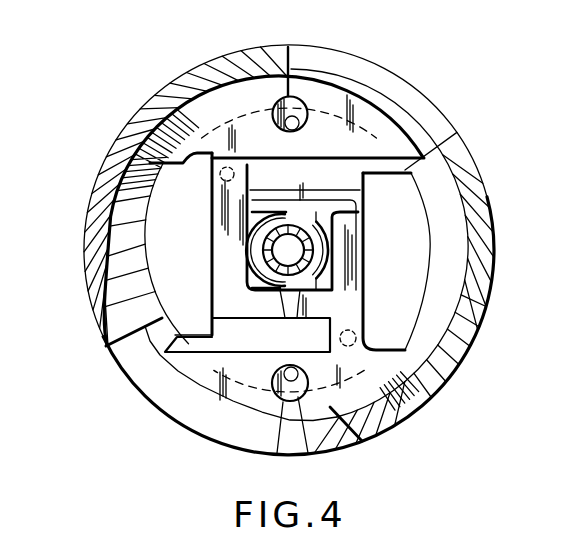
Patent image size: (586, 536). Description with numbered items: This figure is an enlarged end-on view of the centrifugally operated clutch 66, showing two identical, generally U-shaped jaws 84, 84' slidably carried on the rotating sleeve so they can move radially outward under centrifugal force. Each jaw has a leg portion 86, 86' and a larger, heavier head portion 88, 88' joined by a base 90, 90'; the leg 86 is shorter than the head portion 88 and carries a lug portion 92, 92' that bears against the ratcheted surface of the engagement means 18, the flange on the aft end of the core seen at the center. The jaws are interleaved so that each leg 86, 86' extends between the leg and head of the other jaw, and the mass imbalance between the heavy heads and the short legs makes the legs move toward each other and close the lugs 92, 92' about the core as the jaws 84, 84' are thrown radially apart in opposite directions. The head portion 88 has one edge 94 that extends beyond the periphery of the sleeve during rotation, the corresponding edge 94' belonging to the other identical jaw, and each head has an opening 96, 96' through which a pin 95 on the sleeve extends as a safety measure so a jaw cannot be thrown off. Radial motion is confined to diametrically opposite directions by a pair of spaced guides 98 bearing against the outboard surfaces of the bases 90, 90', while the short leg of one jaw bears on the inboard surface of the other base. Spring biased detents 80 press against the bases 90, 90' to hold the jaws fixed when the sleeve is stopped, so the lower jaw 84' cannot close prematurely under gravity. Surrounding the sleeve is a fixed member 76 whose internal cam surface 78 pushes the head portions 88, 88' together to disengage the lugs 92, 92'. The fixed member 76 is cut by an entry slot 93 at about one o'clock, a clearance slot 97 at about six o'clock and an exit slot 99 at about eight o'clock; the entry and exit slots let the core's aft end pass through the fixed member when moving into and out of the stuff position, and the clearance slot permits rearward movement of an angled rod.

The engagement means 18 is at (257, 230).
The centrifugally operated clutch 66 is at (356, 81).
The fixed member 76 is at (98, 172).
The internal cam surface 78 is at (120, 233).
The spring biased detents 80 is at (235, 174).
The U-shaped jaw 84 is at (287, 129).
The U-shaped jaw 84' is at (289, 378).
The leg portion 86 is at (247, 335).
The leg portion 86' is at (305, 181).
The head portion 88 is at (393, 243).
The head portion 88' is at (361, 427).
The base 90 is at (179, 248).
The base 90' is at (394, 261).
The lug portion 92 is at (302, 257).
The lug portion 92' is at (330, 247).
The entry slot 93 is at (393, 88).
The edge 94 is at (157, 125).
The friction surface 94' is at (319, 431).
The pins 95 is at (300, 123).
The opening 96 is at (319, 59).
The opening 96' is at (223, 431).
The clearance slot 97 is at (292, 453).
The spaced guides 98 is at (152, 278).
The exit slot 99 is at (150, 383).